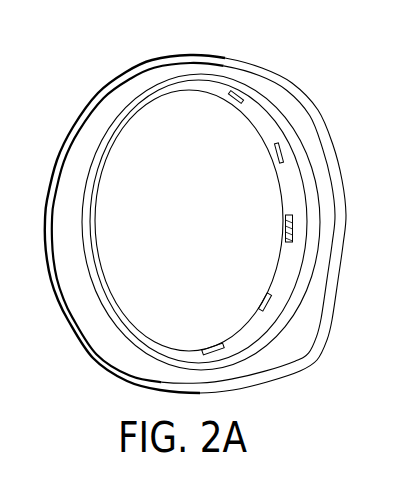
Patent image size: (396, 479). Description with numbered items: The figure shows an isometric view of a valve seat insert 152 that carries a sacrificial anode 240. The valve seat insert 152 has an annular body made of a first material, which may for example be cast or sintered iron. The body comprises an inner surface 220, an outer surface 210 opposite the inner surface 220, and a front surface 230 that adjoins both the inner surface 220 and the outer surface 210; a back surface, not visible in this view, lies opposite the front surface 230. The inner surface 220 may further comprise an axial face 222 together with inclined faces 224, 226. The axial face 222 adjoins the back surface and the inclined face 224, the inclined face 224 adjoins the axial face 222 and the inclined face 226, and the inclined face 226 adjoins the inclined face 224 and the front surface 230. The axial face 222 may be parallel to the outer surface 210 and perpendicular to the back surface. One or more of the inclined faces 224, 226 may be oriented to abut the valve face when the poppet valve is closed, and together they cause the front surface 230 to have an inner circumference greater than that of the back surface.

The valve seat insert 152 is at (217, 210).
The outer surface 210 is at (95, 125).
The inner surface 220 is at (258, 161).
The axial face 222 is at (301, 192).
The inclined face 224 is at (313, 193).
The inclined face 226 is at (319, 164).
The front surface 230 is at (258, 72).
The sacrificial anode 240 is at (264, 297).